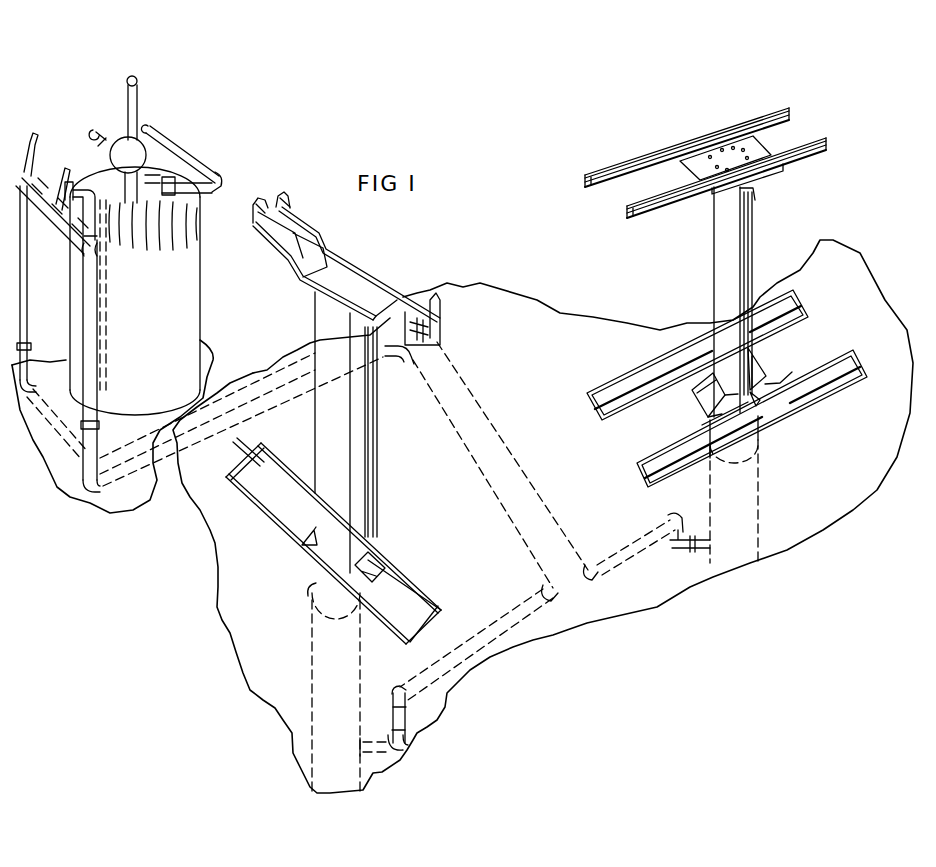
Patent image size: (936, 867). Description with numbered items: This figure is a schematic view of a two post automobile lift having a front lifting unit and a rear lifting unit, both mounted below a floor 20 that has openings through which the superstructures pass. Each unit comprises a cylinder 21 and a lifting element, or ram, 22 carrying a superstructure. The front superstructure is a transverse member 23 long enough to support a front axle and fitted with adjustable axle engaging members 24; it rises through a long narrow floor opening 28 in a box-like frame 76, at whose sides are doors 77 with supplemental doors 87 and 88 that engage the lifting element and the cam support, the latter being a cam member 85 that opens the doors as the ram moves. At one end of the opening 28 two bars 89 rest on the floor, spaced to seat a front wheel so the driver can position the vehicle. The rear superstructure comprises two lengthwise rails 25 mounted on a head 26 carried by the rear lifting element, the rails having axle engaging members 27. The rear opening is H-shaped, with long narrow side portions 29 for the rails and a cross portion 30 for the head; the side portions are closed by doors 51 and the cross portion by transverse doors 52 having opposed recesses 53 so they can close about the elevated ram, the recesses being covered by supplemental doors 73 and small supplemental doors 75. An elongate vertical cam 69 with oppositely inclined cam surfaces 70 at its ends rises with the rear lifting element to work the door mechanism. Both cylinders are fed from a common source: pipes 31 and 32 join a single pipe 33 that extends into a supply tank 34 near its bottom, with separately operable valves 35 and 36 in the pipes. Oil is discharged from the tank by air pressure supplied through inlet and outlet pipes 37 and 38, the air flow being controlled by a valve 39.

The floor 20 is at (78, 497).
The cylinder 21 is at (312, 628).
The lifting element 22 is at (315, 433).
The transverse member 23 is at (368, 280).
The axle engaging members 24 is at (284, 196).
The rails 25 is at (625, 210).
The head 26 is at (690, 165).
The axle engaging members 27 is at (791, 117).
The floor opening 28 is at (257, 507).
The side portions 29 is at (802, 300).
The cross portion 30 is at (778, 382).
The pipe 31 is at (117, 483).
The pipe 32 is at (77, 440).
The pipe 33 is at (90, 185).
The supply tank 34 is at (198, 243).
The valve 35 is at (70, 223).
The valve 36 is at (43, 172).
The inlet pipe 37 is at (104, 135).
The outlet pipe 38 is at (204, 164).
The valve 39 is at (131, 197).
The doors 51 is at (646, 371).
The transverse doors 52 is at (700, 385).
The recesses 53 is at (760, 377).
The cam 69 is at (753, 272).
The cam surfaces 70 is at (748, 193).
The supplemental doors 73 is at (708, 402).
The supplemental doors 75 is at (694, 427).
The box-like frame 76 is at (415, 594).
The doors 77 is at (428, 613).
The cam member 85 is at (377, 462).
The supplemental doors 87 is at (318, 533).
The supplemental doors 88 is at (362, 573).
The bars 89 is at (240, 456).